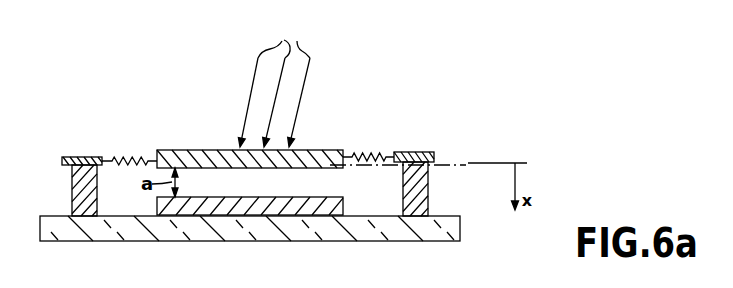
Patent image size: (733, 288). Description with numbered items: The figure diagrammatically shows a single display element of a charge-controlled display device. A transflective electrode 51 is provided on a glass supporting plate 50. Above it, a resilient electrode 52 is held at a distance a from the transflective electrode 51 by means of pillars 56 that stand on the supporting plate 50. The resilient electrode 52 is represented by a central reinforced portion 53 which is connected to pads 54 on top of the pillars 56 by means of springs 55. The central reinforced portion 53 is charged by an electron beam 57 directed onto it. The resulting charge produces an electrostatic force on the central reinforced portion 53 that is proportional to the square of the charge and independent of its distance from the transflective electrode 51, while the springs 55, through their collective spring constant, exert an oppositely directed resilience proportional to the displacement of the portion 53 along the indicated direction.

The glass supporting plate 50 is at (403, 237).
The transflective electrode 51 is at (332, 216).
The resilient electrode 52 is at (341, 126).
The central reinforced portion 53 is at (178, 151).
The pads 54 is at (84, 157).
The springs 55 is at (126, 154).
The pillars 56 is at (78, 186).
The electron beam 57 is at (274, 84).